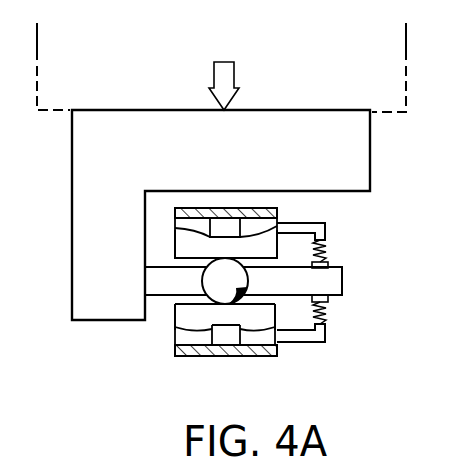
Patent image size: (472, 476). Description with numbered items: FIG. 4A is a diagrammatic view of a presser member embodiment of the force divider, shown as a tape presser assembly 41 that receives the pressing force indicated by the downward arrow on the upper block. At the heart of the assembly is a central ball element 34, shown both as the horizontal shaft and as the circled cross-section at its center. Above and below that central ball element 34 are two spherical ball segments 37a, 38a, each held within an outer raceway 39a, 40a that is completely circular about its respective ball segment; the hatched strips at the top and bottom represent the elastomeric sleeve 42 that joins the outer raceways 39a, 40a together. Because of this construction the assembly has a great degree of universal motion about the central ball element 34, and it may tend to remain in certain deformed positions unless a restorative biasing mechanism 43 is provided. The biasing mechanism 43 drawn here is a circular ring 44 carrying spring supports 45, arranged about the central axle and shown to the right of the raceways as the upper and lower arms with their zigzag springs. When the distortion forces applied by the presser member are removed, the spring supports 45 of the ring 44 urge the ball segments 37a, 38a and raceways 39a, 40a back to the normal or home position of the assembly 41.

The tape presser assembly 41 is at (371, 183).
The central ball element 34 is at (262, 282).
The spherical ball segment 37a is at (279, 223).
The spherical ball segment 38a is at (178, 226).
The outer raceway 39a is at (279, 348).
The outer raceway 40a is at (176, 332).
The elastomeric sleeve 42 is at (215, 357).
The restorative biasing mechanism 43 is at (330, 228).
The circular ring 44 is at (318, 343).
The spring supports 45 is at (323, 313).